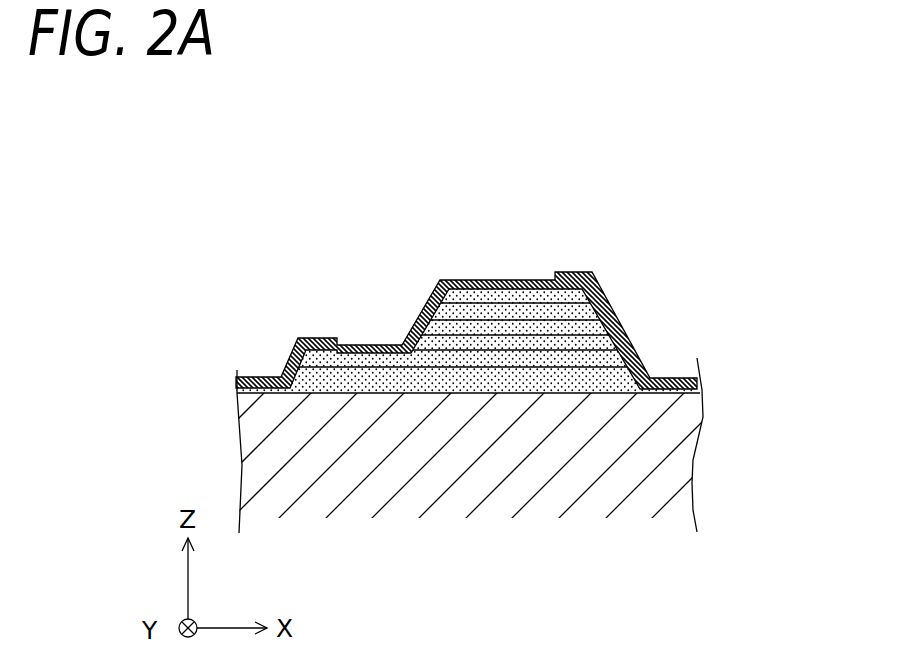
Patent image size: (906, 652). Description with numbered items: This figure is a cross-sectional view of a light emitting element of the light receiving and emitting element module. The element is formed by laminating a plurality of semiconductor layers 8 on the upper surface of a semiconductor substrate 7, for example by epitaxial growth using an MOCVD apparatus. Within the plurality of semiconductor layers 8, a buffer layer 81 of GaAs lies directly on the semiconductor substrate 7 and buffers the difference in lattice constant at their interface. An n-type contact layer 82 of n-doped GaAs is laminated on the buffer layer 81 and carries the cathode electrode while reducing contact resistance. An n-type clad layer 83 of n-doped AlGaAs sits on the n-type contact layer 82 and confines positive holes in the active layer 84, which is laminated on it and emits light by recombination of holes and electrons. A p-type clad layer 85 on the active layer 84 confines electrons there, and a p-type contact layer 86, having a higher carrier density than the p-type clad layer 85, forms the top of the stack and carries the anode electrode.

The semiconductor substrate 7 is at (672, 474).
The plurality of semiconductor layers 8 is at (473, 250).
The buffer layer 81 is at (607, 376).
The n-type contact layer 82 is at (610, 362).
The n-type clad layer 83 is at (607, 350).
The active layer 84 is at (597, 325).
The p-type clad layer 85 is at (588, 308).
The p-type contact layer 86 is at (595, 278).